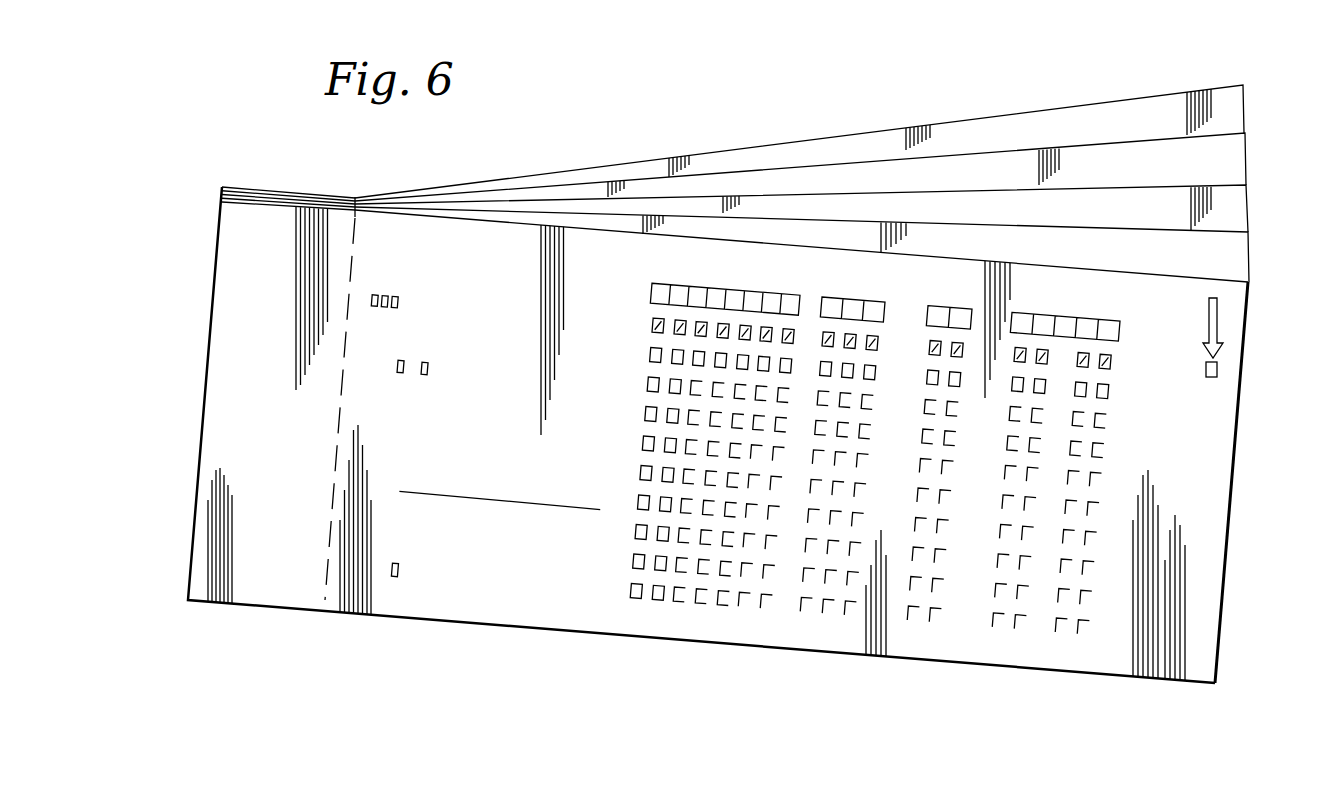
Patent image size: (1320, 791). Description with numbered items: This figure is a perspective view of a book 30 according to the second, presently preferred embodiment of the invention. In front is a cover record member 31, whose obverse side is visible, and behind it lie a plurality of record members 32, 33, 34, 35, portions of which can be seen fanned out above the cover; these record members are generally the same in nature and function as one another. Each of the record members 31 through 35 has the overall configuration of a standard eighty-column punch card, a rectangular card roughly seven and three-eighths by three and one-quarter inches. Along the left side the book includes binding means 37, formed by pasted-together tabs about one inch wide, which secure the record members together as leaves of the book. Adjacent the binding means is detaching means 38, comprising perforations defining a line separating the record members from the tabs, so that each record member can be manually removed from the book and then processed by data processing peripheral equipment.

The book 30 is at (345, 622).
The cover record member 31 is at (1200, 675).
The record member 32 is at (1236, 260).
The record member 33 is at (1234, 213).
The record member 34 is at (1234, 162).
The record member 35 is at (1232, 103).
The binding means 37 is at (272, 192).
The detaching means 38 is at (350, 247).